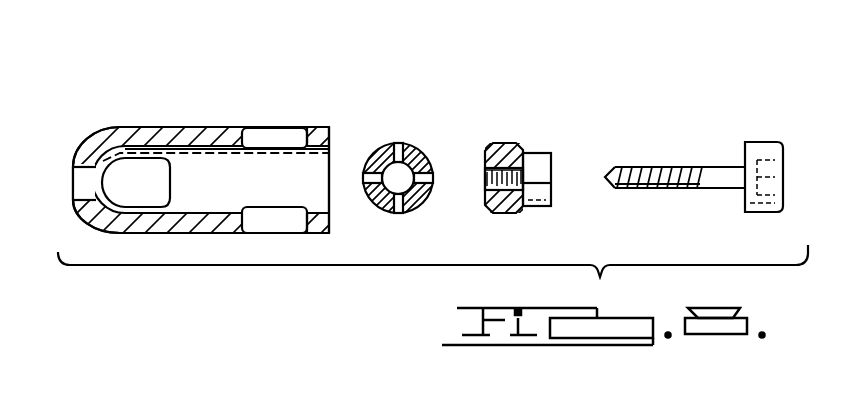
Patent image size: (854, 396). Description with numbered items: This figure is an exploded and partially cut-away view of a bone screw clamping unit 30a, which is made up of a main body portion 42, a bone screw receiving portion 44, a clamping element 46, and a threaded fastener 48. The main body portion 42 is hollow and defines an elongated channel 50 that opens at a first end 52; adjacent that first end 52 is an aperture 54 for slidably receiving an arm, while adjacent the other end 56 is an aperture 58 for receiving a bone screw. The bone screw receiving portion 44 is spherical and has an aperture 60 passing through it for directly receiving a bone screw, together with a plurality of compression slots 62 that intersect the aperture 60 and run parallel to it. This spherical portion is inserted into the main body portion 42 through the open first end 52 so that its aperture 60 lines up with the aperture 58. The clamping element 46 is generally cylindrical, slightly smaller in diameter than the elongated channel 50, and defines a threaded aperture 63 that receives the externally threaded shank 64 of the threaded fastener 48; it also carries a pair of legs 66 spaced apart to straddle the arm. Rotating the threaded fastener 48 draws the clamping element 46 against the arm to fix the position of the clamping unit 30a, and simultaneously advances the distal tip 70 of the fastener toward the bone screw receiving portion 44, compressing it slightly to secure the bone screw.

The main body portion 42 is at (216, 126).
The other end of the main body portion 56 is at (82, 150).
The aperture 58 is at (113, 168).
The elongated channel 50 is at (183, 153).
The aperture 54 is at (296, 130).
The first end 52 is at (333, 130).
The bone screw receiving portion 44 is at (421, 144).
The aperture 60 is at (394, 175).
The compression slots 62 is at (431, 179).
The bone screw clamping unit 30a is at (562, 114).
The legs 66 is at (532, 152).
The clamping element 46 is at (552, 149).
The threaded aperture 63 is at (523, 183).
The externally threaded shank 64 is at (633, 167).
The distal tip 70 is at (606, 182).
The threaded fastener 48 is at (702, 167).